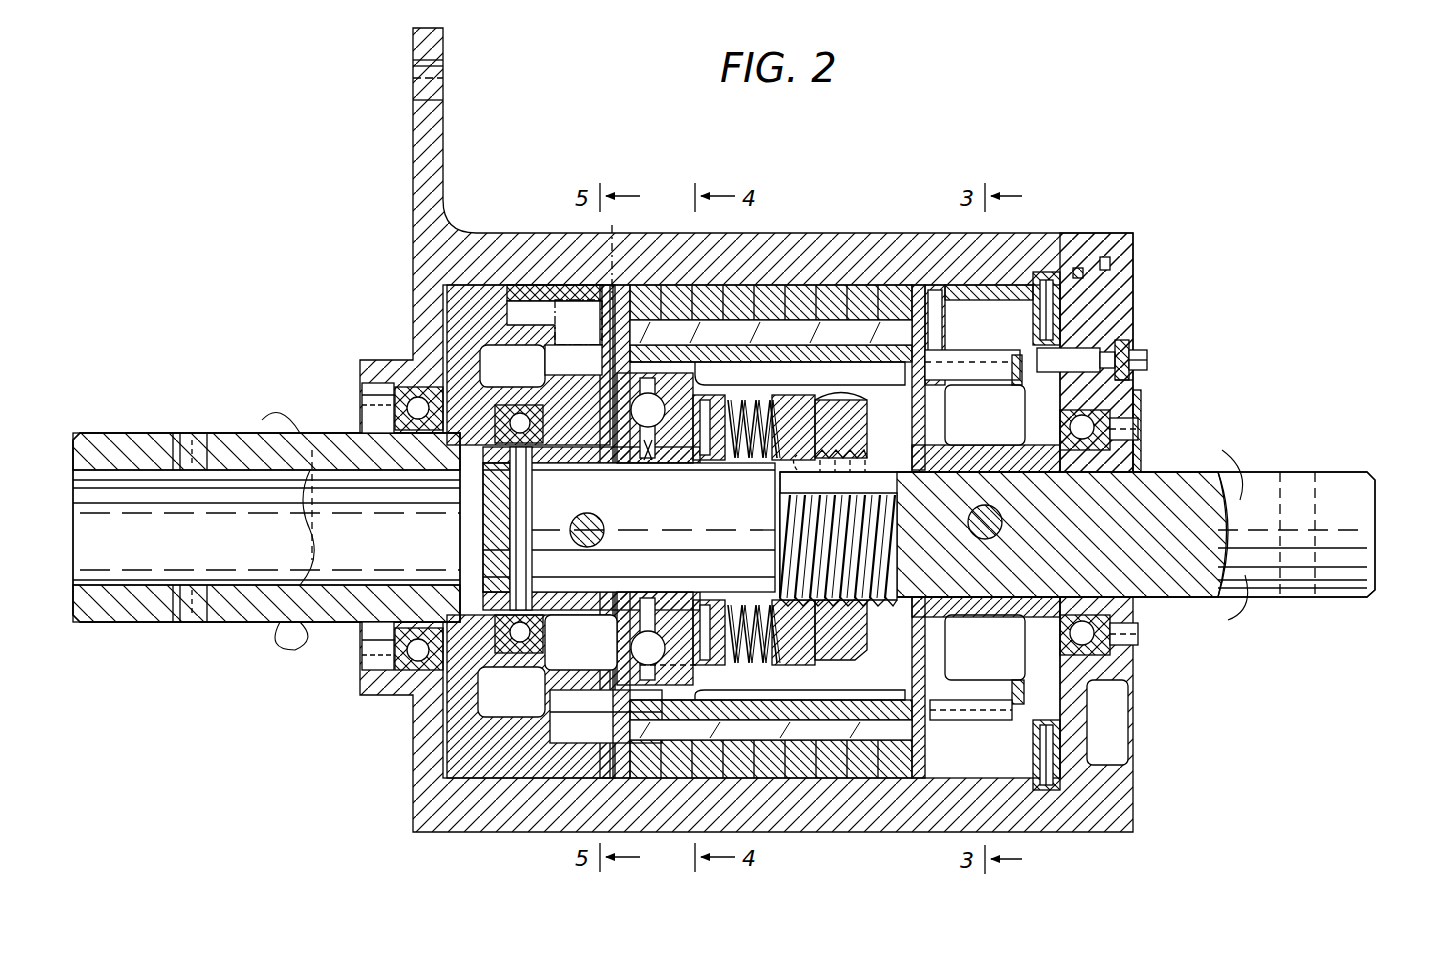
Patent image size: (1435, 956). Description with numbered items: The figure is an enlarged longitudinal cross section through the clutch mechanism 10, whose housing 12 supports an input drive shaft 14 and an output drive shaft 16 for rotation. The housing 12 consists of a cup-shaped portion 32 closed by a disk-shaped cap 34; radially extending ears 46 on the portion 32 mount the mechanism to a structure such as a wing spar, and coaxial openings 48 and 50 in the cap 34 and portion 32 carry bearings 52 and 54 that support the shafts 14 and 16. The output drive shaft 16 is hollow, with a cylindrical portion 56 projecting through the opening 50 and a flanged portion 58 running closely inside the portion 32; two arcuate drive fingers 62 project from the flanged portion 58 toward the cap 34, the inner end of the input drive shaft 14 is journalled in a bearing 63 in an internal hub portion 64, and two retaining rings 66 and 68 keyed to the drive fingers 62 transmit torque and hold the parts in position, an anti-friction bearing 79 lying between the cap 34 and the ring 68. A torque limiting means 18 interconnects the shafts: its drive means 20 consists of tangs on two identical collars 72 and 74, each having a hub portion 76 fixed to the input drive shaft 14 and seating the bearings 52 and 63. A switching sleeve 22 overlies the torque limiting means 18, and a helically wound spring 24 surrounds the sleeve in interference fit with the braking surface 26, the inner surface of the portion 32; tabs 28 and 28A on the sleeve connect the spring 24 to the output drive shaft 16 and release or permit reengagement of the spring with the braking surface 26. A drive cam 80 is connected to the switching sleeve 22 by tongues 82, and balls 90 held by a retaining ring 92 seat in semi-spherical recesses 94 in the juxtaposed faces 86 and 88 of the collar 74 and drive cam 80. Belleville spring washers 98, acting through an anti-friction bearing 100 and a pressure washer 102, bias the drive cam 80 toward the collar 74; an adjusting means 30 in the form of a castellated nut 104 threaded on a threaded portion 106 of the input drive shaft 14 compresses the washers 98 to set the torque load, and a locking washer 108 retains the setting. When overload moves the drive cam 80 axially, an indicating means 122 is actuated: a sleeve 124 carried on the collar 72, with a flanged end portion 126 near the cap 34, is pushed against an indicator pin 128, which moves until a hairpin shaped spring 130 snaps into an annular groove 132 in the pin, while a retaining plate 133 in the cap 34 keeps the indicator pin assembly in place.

The clutch mechanism 10 is at (1096, 157).
The housing 12 is at (769, 478).
The input drive shaft 14 is at (1077, 519).
The output drive shaft 16 is at (266, 509).
The torque limiting means 18 is at (629, 511).
The drive means 20 is at (618, 292).
The switching sleeve 22 is at (778, 335).
The helically wound spring 24 is at (712, 288).
The braking surface 26 is at (822, 292).
The tab 28 is at (613, 252).
The tab 28A is at (936, 292).
The adjusting means 30 is at (862, 422).
The cup-shaped portion 32 is at (542, 233).
The cap 34 is at (1135, 280).
The ears 46 is at (445, 118).
The opening 48 is at (1140, 430).
The opening 50 is at (372, 415).
The bearing 52 is at (1060, 415).
The bearing 54 is at (400, 672).
The cylindrical portion 56 is at (120, 440).
The flanged portion 58 is at (482, 290).
The drive fingers 62 is at (560, 378).
The bearing 63 is at (493, 665).
The internal hub portion 64 is at (512, 366).
The retaining ring 66 is at (568, 292).
The retaining ring 68 is at (978, 295).
The collar 72 is at (953, 450).
The collar 74 is at (580, 448).
The hub portion 76 is at (605, 618).
The anti-friction bearing 79 is at (1046, 290).
The drive cam 80 is at (618, 420).
The tongues 82 is at (640, 667).
The face 86 is at (648, 430).
The face 88 is at (655, 442).
The balls 90 is at (648, 630).
The retaining ring 92 is at (640, 618).
The semi-spherical recesses 94 is at (630, 648).
The Belleville spring washers 98 is at (752, 470).
The anti-friction bearing 100 is at (732, 605).
The pressure washer 102 is at (795, 665).
The castellated nut 104 is at (850, 620).
The threaded portion 106 is at (880, 540).
The locking washer 108 is at (845, 445).
The indicating means 122 is at (925, 705).
The sleeve 124 is at (1000, 672).
The flanged end portion 126 is at (998, 370).
The indicator pin 128 is at (1140, 358).
The hairpin shaped spring 130 is at (1135, 348).
The annular groove 132 is at (1103, 352).
The retaining plate 133 is at (1135, 380).